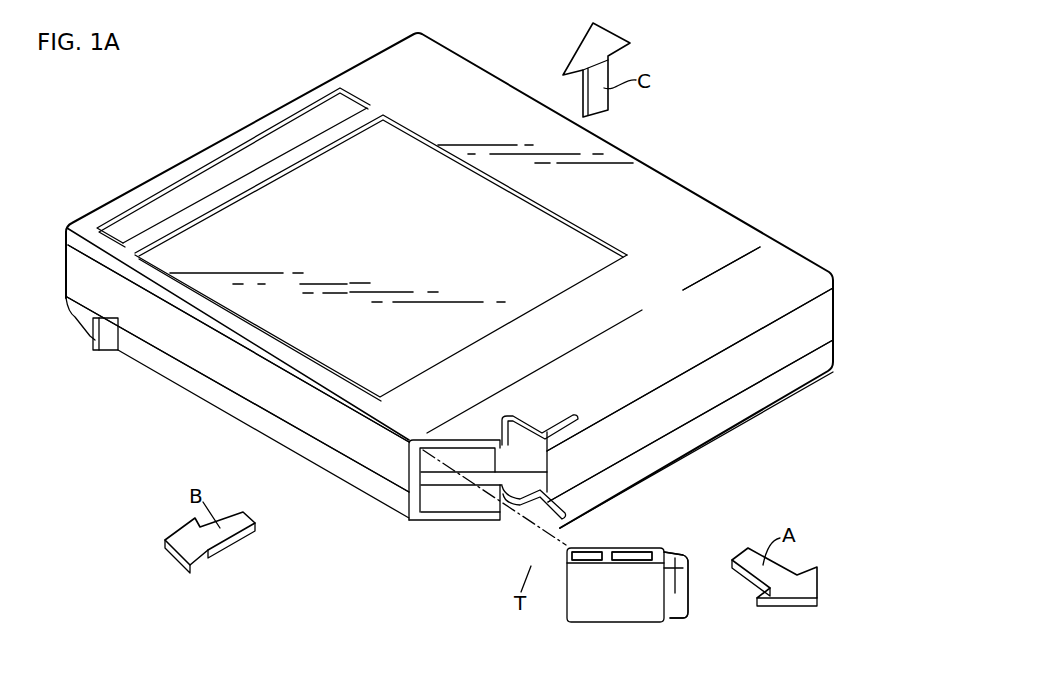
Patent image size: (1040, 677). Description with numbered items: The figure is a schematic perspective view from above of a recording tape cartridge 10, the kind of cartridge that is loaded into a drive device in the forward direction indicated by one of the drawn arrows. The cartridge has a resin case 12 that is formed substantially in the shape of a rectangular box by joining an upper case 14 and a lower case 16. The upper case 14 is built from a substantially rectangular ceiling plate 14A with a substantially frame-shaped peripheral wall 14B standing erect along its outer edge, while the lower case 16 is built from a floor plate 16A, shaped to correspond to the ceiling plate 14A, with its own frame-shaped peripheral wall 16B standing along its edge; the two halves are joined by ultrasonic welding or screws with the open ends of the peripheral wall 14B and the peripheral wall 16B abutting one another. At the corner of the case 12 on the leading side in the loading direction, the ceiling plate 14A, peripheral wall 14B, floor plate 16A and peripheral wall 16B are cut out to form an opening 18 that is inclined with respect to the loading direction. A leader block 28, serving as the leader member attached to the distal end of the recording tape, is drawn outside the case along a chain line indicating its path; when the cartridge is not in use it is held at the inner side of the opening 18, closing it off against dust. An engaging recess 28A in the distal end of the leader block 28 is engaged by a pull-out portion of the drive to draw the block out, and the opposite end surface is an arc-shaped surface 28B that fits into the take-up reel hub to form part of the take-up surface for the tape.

The recording tape cartridge 10 is at (653, 124).
The case 12 is at (784, 420).
The upper case 14 is at (692, 400).
The ceiling plate 14A is at (720, 228).
The peripheral wall 14B is at (297, 407).
The lower case 16 is at (688, 438).
The floor plate 16A is at (427, 510).
The peripheral wall 16B is at (330, 458).
The opening 18 is at (476, 455).
The leader block 28 is at (616, 630).
The engaging recess 28A is at (668, 610).
The arc-shaped surface 28B is at (573, 546).